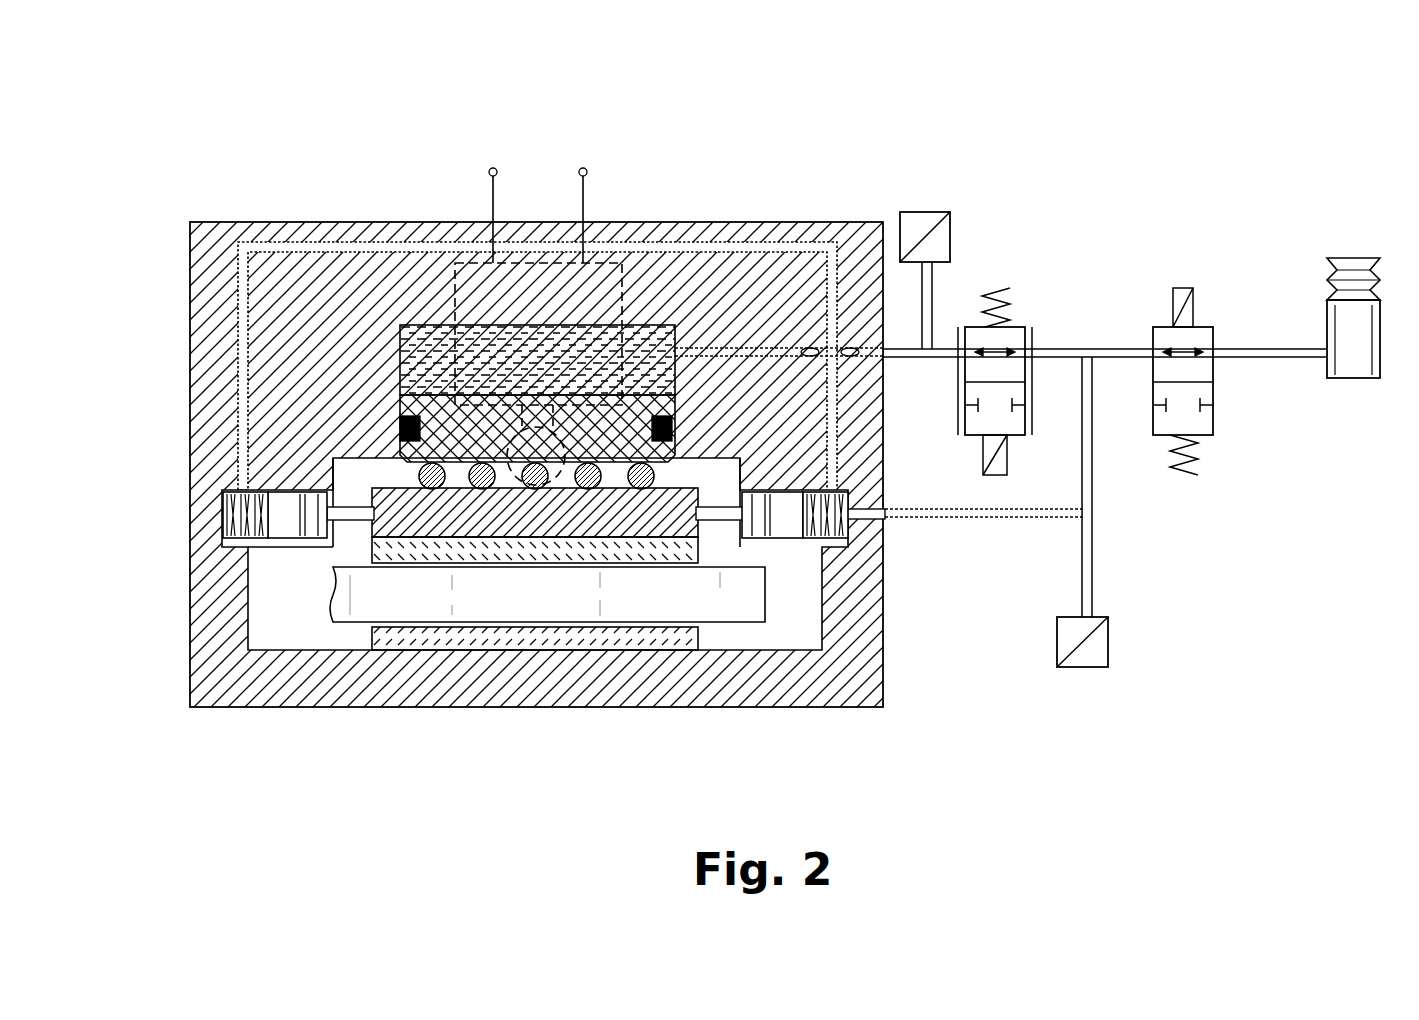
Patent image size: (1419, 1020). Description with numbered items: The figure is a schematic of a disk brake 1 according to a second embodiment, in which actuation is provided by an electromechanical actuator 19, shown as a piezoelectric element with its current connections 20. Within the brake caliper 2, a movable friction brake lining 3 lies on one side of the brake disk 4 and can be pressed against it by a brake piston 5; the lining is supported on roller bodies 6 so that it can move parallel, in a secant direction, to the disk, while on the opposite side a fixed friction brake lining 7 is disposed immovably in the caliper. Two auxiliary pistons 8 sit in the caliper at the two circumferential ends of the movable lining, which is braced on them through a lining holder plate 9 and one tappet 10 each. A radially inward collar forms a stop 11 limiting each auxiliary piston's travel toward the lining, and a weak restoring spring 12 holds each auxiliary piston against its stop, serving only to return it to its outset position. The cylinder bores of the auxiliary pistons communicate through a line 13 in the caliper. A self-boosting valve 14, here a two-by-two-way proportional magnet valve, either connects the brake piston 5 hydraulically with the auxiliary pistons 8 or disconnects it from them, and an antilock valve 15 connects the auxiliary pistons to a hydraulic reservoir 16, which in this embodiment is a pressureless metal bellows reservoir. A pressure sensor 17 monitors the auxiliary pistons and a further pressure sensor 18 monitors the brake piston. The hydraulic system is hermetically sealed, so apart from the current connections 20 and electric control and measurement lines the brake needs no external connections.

The disk brake 1 is at (208, 150).
The brake caliper 2 is at (215, 355).
The friction brake lining 3 is at (565, 555).
The brake disk 4 is at (502, 594).
The brake piston 5 is at (632, 390).
The roller bodies 6 is at (641, 492).
The fixed friction brake lining 7 is at (441, 648).
The auxiliary pistons 8 is at (292, 512).
The lining holder plate 9 is at (430, 522).
The tappet 10 is at (355, 513).
The stop 11 is at (318, 527).
The restoring spring 12 is at (232, 516).
The line 13 is at (748, 243).
The self-boosting valve 14 is at (1020, 327).
The antilock valve 15 is at (1208, 327).
The hydraulic reservoir 16 is at (1355, 262).
The pressure sensor 17 is at (1108, 632).
The pressure sensor 18 is at (935, 212).
The electromechanical actuator 19 is at (478, 265).
The current connections 20 is at (582, 167).